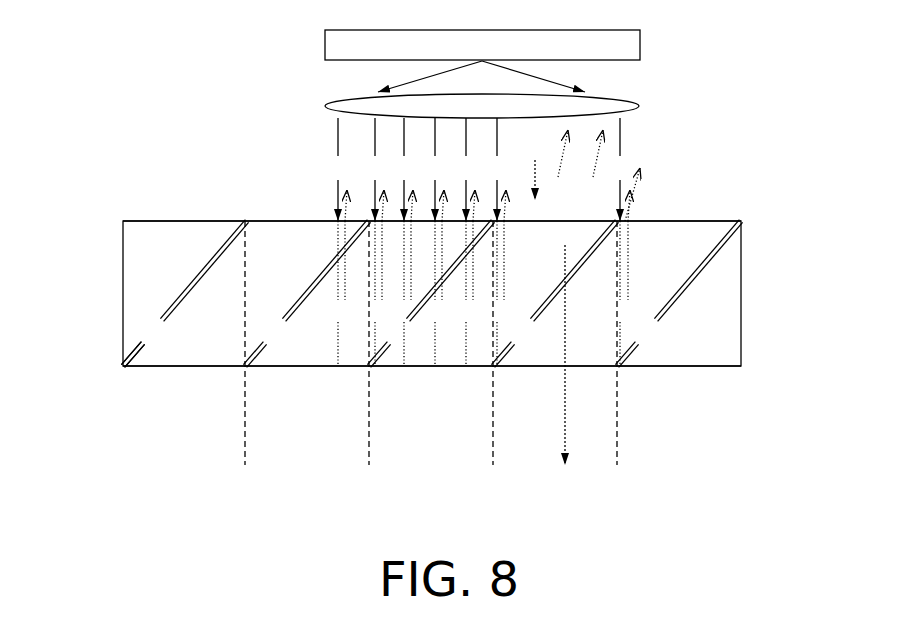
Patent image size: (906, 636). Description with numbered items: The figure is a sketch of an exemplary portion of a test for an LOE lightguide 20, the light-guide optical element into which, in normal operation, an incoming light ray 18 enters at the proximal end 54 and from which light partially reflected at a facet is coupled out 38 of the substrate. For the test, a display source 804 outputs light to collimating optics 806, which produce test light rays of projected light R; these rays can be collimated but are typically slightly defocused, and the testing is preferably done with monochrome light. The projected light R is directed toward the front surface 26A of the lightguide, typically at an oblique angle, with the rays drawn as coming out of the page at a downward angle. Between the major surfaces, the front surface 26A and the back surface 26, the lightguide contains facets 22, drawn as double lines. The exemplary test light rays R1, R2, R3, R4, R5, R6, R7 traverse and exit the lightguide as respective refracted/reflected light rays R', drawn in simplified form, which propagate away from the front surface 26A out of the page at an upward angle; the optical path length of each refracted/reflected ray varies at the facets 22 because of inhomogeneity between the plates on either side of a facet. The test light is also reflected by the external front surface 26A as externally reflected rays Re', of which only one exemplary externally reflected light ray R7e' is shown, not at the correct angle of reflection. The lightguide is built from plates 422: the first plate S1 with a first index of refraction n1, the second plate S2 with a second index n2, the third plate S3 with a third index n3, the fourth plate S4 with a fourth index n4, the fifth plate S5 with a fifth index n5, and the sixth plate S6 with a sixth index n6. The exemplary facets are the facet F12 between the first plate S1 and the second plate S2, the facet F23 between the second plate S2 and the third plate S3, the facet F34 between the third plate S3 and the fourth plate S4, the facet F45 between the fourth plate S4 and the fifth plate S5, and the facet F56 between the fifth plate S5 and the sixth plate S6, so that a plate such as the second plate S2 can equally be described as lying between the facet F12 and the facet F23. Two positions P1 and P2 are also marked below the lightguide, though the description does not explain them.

The display source 804 is at (482, 61).
The collimating optics 806 is at (482, 106).
The LOE lightguide 20 is at (432, 293).
The front surface 26A is at (167, 221).
The back surface 26 is at (167, 367).
The facets 22 is at (152, 312).
The plates 422 is at (95, 271).
The incoming light ray 18 is at (710, 325).
The proximal end 54 is at (687, 342).
The coupled out 38 is at (567, 371).
The first position P1 is at (372, 368).
The second position P2 is at (493, 368).
The facet F12 is at (184, 294).
The facet F23 is at (306, 294).
The facet F34 is at (430, 294).
The facet F45 is at (554, 294).
The facet F56 is at (678, 294).
The test light ray R1 is at (339, 242).
The test light ray R2 is at (376, 242).
The test light ray R3 is at (405, 242).
The test light ray R4 is at (436, 242).
The test light ray R5 is at (466, 242).
The test light ray R6 is at (497, 242).
The test light ray R7 is at (621, 242).
The projected light R is at (532, 168).
The refracted/reflected light rays R' is at (557, 164).
The externally reflected rays Re' is at (592, 164).
The externally reflected light ray R7e' is at (648, 181).
The first index of refraction n1 is at (193, 243).
The second index of refraction n2 is at (267, 243).
The third index of refraction n3 is at (388, 250).
The fourth index of refraction n4 is at (517, 243).
The fifth index of refraction n5 is at (640, 245).
The sixth index of refraction n6 is at (722, 267).
The plate-1 S1 is at (148, 285).
The plate-2 S2 is at (225, 285).
The plate-3 S3 is at (357, 272).
The plate-4 S4 is at (518, 270).
The plate-5 S5 is at (643, 287).
The plate-6 S6 is at (707, 287).